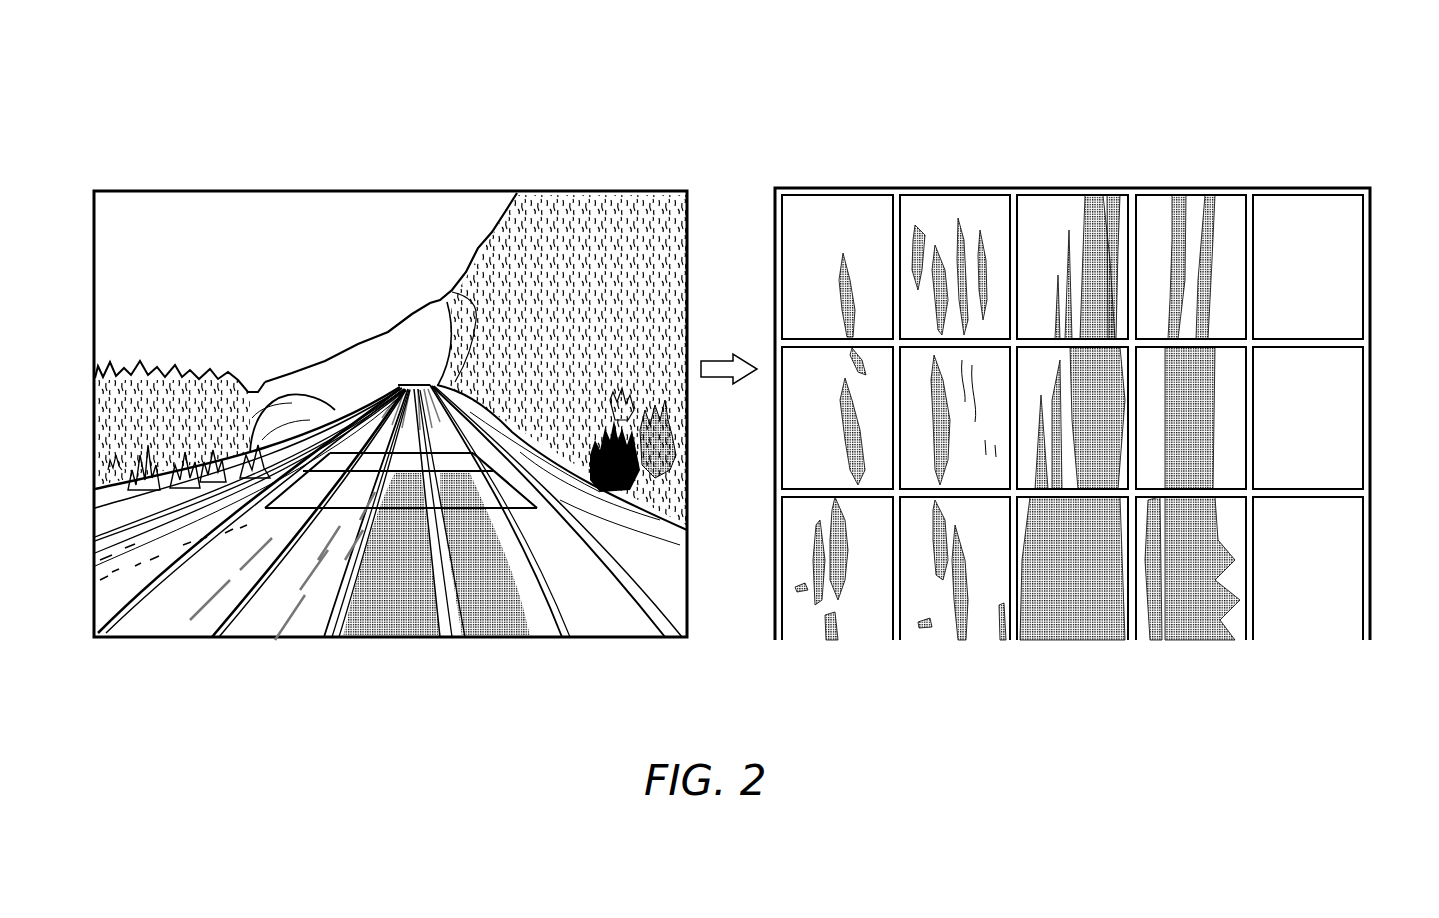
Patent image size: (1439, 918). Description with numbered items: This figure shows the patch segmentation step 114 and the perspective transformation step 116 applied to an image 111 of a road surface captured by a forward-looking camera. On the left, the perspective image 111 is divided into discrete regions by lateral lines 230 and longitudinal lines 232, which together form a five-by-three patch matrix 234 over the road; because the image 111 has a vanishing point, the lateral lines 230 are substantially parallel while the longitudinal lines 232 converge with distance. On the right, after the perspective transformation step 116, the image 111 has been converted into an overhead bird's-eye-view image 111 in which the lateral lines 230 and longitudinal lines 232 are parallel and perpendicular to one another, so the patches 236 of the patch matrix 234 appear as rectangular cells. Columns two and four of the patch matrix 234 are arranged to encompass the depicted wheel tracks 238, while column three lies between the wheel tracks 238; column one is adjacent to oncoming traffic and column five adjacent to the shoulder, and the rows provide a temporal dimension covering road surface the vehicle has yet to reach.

The patch segmentation step 114 is at (436, 168).
The image 111 is at (582, 175).
The perspective transformation step 116 is at (1122, 147).
The lateral lines 230 is at (343, 497).
The longitudinal lines 232 is at (378, 496).
The patch matrix 234 is at (413, 496).
The patches 236 is at (300, 589).
The wheel tracks 238 is at (448, 494).